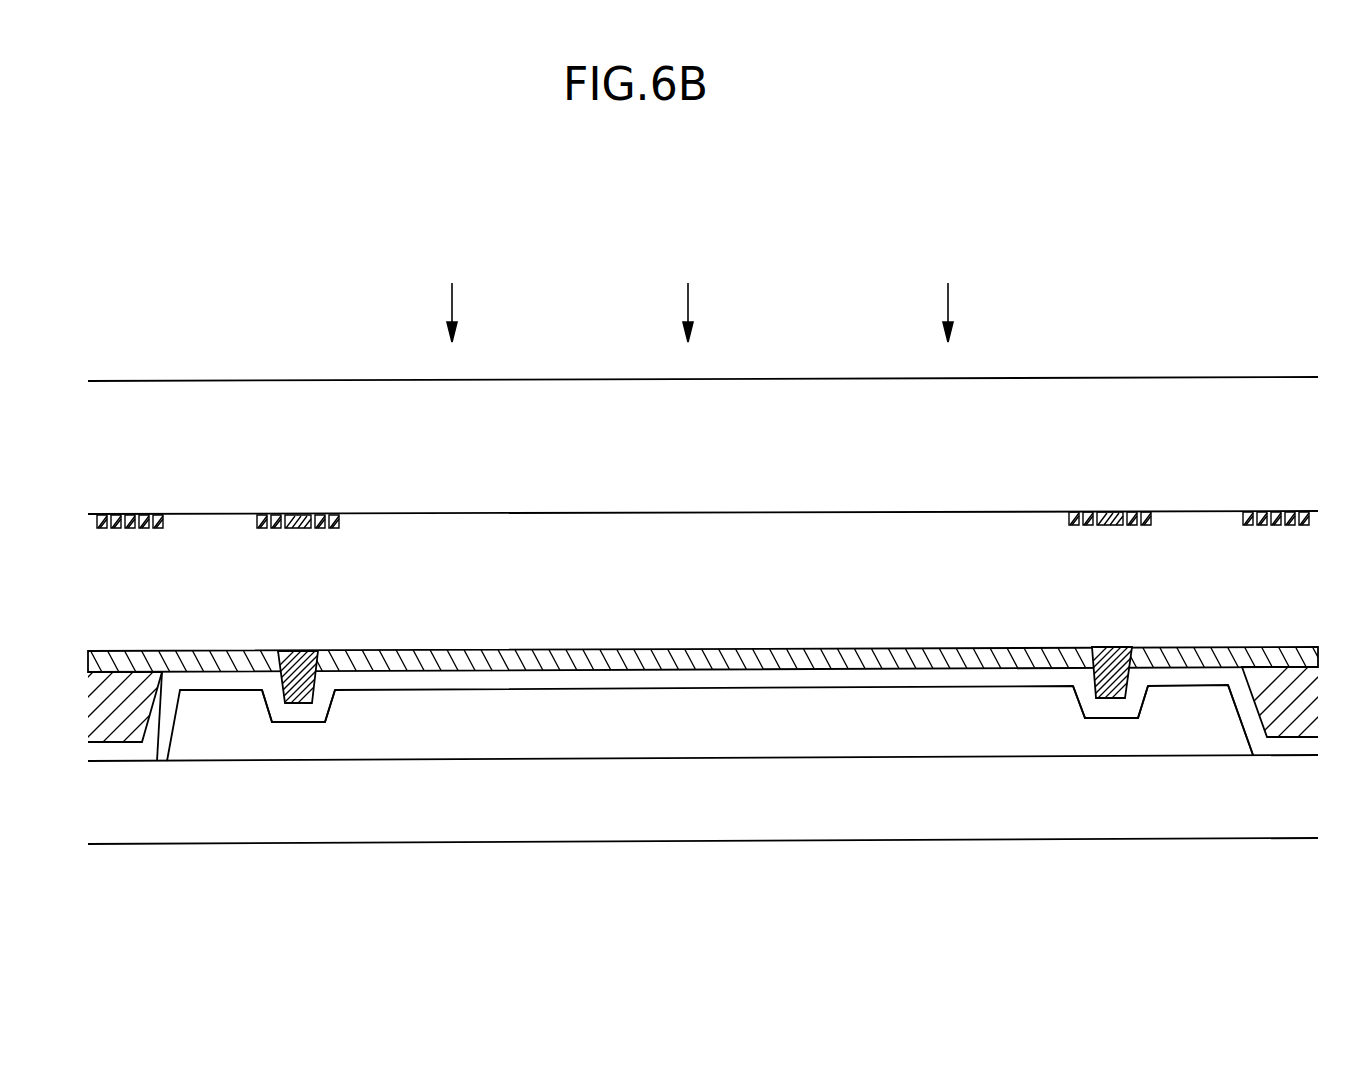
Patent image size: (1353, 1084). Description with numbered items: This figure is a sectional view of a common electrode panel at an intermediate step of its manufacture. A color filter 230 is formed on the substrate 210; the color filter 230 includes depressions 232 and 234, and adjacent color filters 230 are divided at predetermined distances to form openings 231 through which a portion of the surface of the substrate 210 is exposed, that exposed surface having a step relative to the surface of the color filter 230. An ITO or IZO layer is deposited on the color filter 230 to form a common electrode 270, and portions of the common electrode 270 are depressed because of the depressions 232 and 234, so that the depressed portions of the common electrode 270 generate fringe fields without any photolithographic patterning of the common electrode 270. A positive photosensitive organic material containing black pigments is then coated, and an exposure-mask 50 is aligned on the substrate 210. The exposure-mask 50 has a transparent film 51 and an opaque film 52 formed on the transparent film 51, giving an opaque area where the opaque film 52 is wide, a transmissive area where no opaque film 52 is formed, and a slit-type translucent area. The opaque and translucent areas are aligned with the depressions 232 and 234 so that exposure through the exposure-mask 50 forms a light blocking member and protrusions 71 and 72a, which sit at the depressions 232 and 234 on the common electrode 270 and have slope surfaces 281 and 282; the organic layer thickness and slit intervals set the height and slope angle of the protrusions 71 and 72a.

The exposure-mask 50 is at (1128, 372).
The transparent film 51 is at (537, 402).
The opaque film 52 is at (295, 515).
The protrusion 71 is at (1113, 667).
The protrusion 72a is at (297, 670).
The substrate 210 is at (425, 825).
The color filter 230 is at (563, 732).
The opening 231 is at (1288, 740).
The depression 232 is at (290, 736).
The depression 234 is at (1103, 730).
The common electrode 270 is at (1248, 720).
The slope surface 281 is at (270, 650).
The slope surface 282 is at (1080, 648).